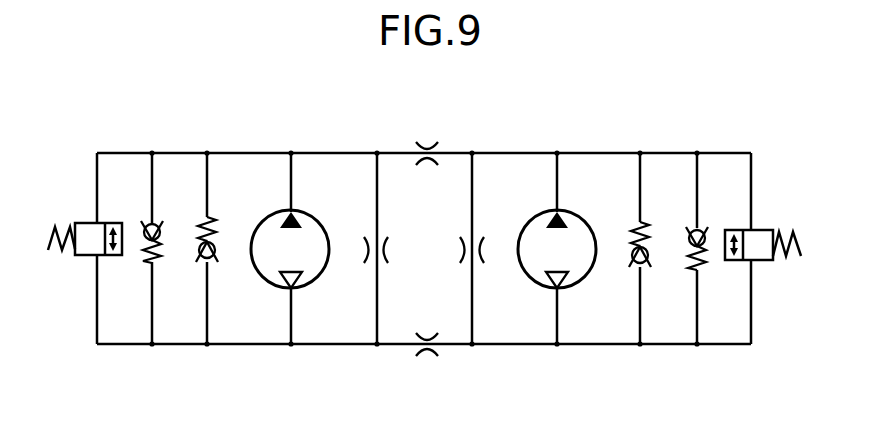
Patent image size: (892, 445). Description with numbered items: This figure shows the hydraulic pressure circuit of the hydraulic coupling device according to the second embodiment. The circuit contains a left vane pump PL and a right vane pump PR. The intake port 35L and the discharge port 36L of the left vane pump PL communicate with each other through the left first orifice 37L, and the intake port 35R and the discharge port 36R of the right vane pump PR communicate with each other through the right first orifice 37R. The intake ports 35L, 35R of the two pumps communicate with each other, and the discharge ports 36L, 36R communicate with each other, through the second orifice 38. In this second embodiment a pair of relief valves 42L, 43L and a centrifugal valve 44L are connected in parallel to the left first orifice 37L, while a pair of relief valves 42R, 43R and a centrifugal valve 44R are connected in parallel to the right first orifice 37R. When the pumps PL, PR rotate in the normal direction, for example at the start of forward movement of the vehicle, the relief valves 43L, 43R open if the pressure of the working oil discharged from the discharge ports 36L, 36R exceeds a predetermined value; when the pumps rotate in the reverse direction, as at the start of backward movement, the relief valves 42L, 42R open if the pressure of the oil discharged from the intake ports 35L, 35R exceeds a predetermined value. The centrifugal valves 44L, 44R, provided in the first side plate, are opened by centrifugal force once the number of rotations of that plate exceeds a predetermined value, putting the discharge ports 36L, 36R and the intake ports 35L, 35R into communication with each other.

The intake port 35L is at (292, 288).
The intake port 35R is at (558, 288).
The discharge port 36L is at (291, 209).
The discharge port 36R is at (557, 210).
The left first orifice 37L is at (364, 254).
The right first orifice 37R is at (483, 250).
The second orifice 38 is at (425, 147).
The relief valve 42L is at (199, 254).
The relief valve 42R is at (647, 262).
The relief valve 43L is at (161, 224).
The relief valve 43R is at (689, 232).
The centrifugal valve 44L is at (92, 256).
The centrifugal valve 44R is at (766, 261).
The left vane pump PL is at (332, 232).
The right vane pump PR is at (516, 229).